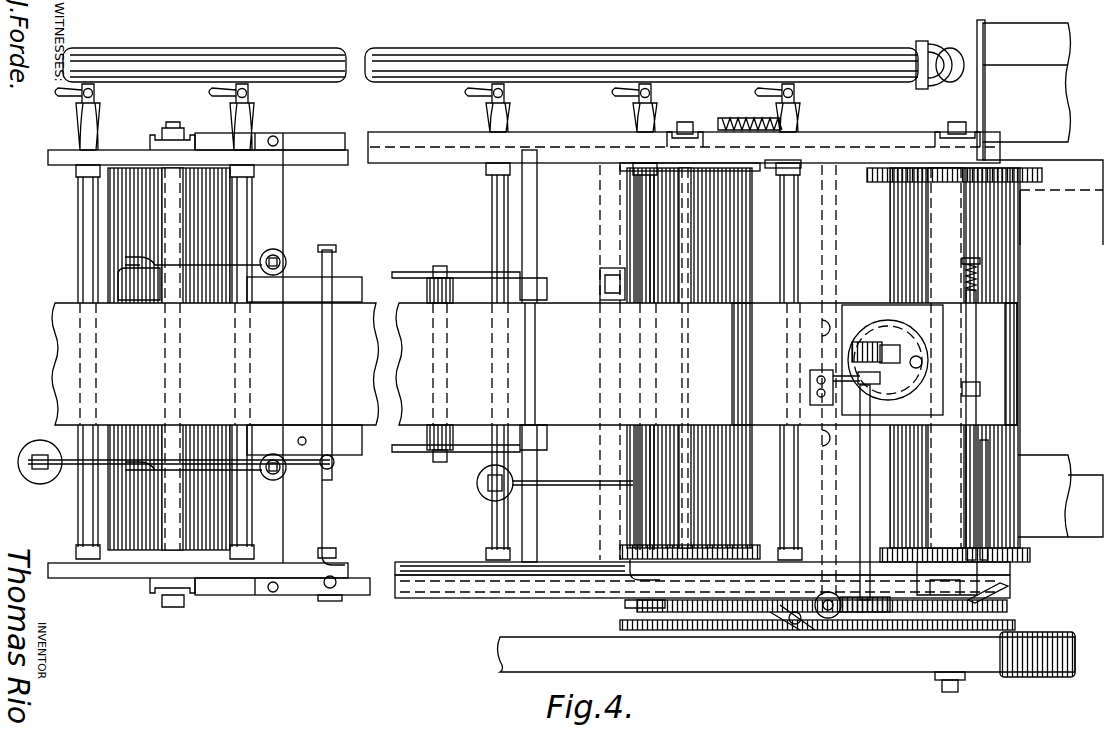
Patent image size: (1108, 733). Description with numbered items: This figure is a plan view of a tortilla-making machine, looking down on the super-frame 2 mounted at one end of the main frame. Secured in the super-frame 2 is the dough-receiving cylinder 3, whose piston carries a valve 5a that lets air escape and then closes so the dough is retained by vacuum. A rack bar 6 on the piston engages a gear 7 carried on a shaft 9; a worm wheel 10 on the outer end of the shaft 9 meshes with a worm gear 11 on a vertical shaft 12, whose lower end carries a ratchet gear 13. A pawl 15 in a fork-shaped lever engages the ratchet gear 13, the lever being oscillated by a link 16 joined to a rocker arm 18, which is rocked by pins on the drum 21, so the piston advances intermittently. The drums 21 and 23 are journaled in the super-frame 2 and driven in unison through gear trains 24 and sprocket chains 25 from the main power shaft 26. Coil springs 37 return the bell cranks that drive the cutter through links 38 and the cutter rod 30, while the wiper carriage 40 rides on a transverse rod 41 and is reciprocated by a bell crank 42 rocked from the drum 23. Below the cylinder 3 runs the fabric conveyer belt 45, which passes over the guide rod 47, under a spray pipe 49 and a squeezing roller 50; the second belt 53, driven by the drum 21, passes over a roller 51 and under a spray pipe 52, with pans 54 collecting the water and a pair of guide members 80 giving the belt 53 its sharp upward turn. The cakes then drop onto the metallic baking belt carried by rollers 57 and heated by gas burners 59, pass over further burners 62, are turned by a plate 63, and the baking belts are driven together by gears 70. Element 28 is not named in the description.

The roller 57 is at (108, 232).
The gas burner 59 is at (83, 279).
The second belt 53 is at (62, 373).
The guide rod 47 is at (127, 445).
The roller 51 is at (273, 292).
The spray pipe 52 is at (335, 293).
The pan 54 is at (335, 458).
The burner 62 is at (502, 237).
The guide member 80 is at (607, 283).
The squeezing roller 50 is at (688, 462).
The spray pipe 49 is at (636, 408).
The conveyer belt 45 is at (766, 312).
The cylinder 3 is at (880, 318).
The gear 7 is at (880, 362).
The valve 5a is at (916, 360).
The rack bar 6 is at (890, 366).
The shaft 9 is at (862, 505).
The carriage 40 is at (977, 335).
The gear 70 is at (1025, 172).
The turning plate 63 is at (1043, 339).
The drum 23 is at (1015, 489).
The bell crank 42 is at (987, 512).
The coil spring 37 is at (752, 118).
The bearing 28 is at (870, 150).
The link 38 is at (778, 163).
The rod 30 is at (827, 230).
The rod 41 is at (980, 225).
The drum 21 is at (745, 515).
The gear train 24 is at (622, 552).
The super-frame 2 is at (763, 589).
The worm gear 11 is at (835, 592).
The worm wheel 10 is at (890, 575).
The sprocket chain 25 is at (997, 605).
The rocker arm 18 is at (650, 613).
The shaft 12 is at (838, 617).
The ratchet gear 13 is at (823, 615).
The link 16 is at (775, 618).
The pawl 15 is at (797, 625).
The main power shaft 26 is at (950, 692).